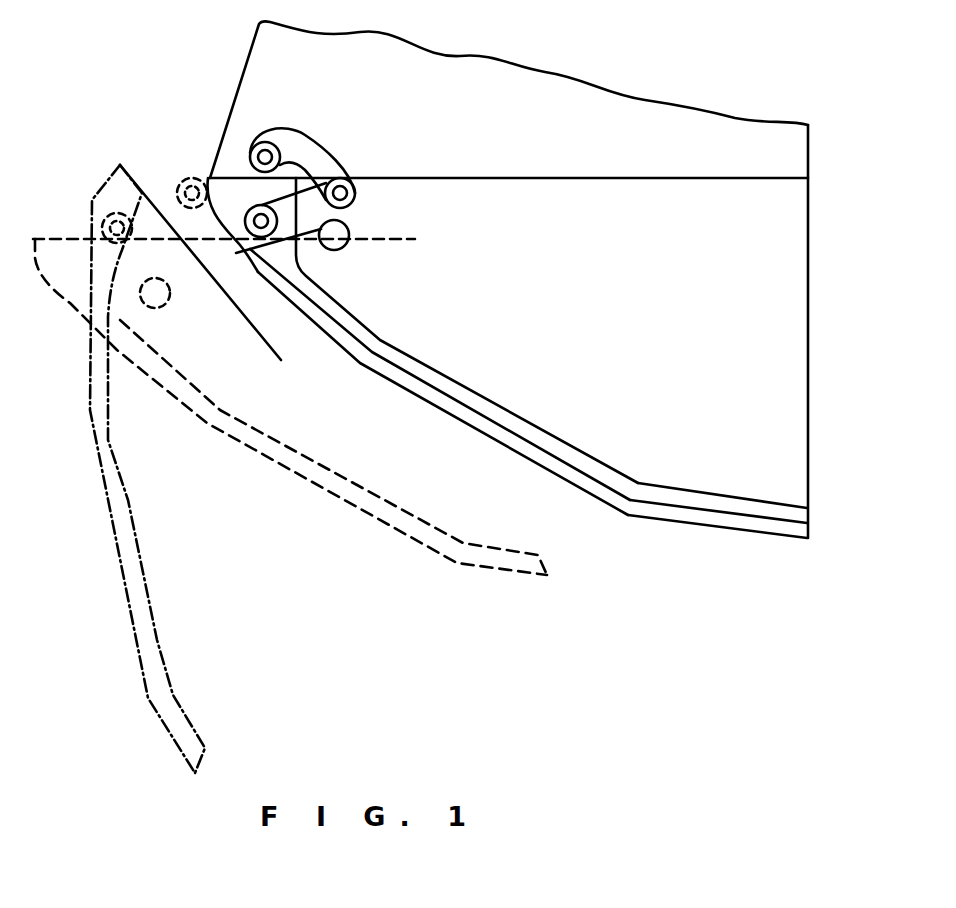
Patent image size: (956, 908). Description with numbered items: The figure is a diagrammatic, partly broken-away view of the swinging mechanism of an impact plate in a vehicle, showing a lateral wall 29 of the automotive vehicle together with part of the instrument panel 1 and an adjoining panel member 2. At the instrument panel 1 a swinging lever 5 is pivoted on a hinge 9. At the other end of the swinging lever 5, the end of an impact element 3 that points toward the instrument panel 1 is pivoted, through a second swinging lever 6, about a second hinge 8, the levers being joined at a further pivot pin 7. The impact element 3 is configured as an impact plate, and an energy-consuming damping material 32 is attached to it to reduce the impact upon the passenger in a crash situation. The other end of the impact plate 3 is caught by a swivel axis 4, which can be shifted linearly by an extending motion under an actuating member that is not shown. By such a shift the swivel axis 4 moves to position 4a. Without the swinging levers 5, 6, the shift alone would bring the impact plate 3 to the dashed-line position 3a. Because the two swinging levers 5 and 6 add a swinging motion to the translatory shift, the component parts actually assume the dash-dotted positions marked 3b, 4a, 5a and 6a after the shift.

The instrument panel 1 is at (257, 78).
The frame lower member 2 is at (785, 172).
The lateral wall 29 is at (795, 360).
The impact element 3 is at (655, 493).
The energy-consuming damping material 32 is at (513, 446).
The position of impact plate 3a is at (482, 563).
The position of impact plate after shift 3b is at (175, 703).
The swivel axis 4 is at (348, 237).
The position of swivel axis after shift 4a is at (166, 306).
The swinging lever 5 is at (312, 152).
The position of swinging lever after shift 5a is at (235, 190).
The second swinging lever 6 is at (305, 208).
The position of second swinging lever after shift 6a is at (119, 170).
The pivot pin 7 is at (262, 237).
The second hinge 8 is at (347, 193).
The hinge 9 is at (265, 147).